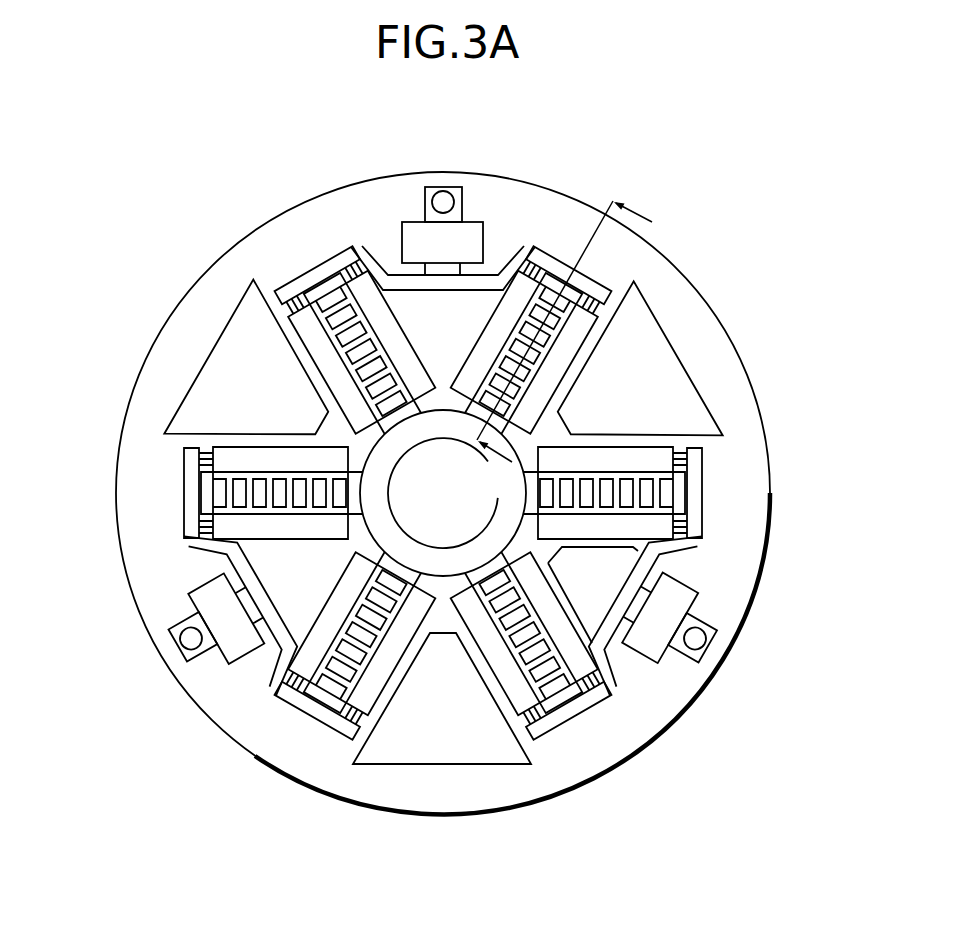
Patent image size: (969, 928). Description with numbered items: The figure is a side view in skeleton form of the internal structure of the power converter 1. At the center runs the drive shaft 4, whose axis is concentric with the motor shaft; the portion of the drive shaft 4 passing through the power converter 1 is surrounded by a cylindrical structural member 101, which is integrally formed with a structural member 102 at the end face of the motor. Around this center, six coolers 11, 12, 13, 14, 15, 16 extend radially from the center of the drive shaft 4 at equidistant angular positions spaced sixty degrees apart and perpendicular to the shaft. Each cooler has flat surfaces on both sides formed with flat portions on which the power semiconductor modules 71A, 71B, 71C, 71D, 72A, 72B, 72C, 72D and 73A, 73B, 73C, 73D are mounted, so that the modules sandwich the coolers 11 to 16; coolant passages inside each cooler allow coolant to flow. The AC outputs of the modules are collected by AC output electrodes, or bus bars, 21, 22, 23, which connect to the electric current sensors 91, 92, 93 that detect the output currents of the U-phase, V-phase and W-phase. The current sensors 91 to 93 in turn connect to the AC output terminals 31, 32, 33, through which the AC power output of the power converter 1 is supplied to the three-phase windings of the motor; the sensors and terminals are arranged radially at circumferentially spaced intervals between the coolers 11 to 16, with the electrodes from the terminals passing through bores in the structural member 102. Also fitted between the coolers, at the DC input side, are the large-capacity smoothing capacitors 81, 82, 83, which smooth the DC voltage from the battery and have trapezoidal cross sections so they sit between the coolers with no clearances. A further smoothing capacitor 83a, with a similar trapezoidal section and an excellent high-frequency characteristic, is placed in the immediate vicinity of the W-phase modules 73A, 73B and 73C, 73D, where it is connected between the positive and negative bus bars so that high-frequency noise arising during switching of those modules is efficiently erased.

The power converter 1 is at (582, 119).
The drive shaft 4 is at (442, 535).
The cylindrical structural member 101 is at (386, 514).
The structural member 102 is at (499, 176).
The cooler 11 is at (548, 292).
The cooler 12 is at (318, 302).
The cooler 13 is at (200, 490).
The cooler 14 is at (322, 695).
The cooler 15 is at (590, 665).
The cooler 16 is at (682, 492).
The AC output electrode (bus bar) 21 is at (441, 282).
The AC output electrode (bus bar) 22 is at (250, 594).
The AC output electrode (bus bar) 23 is at (706, 570).
The AC output terminal 31 is at (441, 192).
The AC output terminal 32 is at (182, 640).
The AC output terminal 33 is at (703, 638).
The power semiconductor module 71A is at (598, 318).
The power semiconductor module 71B is at (540, 276).
The power semiconductor module 71C is at (322, 288).
The power semiconductor module 71D is at (297, 308).
The power semiconductor module 72A is at (218, 463).
The power semiconductor module 72B is at (218, 527).
The power semiconductor module 72C is at (318, 692).
The power semiconductor module 72D is at (343, 713).
The power semiconductor module 73A is at (527, 697).
The power semiconductor module 73B is at (603, 693).
The power semiconductor module 73C is at (682, 526).
The power semiconductor module 73D is at (682, 460).
The smoothing capacitor 81 is at (680, 358).
The smoothing capacitor 82 is at (210, 360).
The smoothing capacitor 83 is at (440, 753).
The smoothing capacitor 83a is at (612, 642).
The electric current sensor 91 is at (418, 232).
The electric current sensor 92 is at (222, 650).
The electric current sensor 93 is at (690, 602).